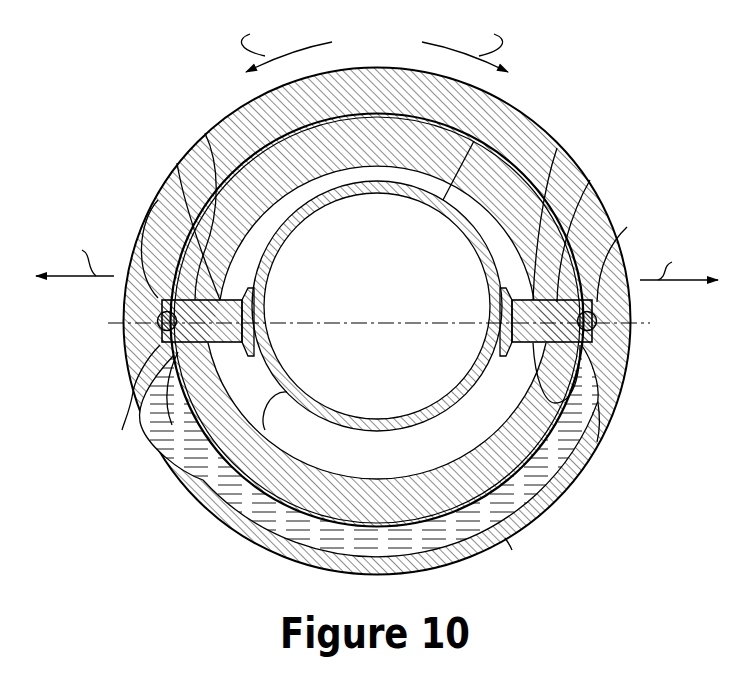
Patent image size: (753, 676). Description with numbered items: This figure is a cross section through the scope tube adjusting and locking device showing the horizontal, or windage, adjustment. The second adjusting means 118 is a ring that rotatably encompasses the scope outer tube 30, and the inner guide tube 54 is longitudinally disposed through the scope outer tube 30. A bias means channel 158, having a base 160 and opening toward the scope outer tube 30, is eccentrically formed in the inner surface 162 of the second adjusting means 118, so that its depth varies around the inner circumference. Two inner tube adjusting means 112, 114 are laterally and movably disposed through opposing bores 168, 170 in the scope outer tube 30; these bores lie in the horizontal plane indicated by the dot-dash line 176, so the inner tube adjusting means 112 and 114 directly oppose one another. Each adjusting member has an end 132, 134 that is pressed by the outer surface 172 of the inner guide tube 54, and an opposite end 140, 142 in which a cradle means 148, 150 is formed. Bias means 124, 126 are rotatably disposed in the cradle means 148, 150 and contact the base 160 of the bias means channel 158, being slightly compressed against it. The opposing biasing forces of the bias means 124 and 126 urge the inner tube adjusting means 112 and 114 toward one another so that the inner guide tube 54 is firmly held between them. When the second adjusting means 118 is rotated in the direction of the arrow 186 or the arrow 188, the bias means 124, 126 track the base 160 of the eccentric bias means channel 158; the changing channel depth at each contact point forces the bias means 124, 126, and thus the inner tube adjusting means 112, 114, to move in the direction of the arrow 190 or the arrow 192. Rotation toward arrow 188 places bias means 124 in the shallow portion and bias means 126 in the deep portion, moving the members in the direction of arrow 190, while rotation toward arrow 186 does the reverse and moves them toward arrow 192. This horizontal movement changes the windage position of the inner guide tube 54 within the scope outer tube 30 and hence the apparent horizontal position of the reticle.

The scope outer tube 30 is at (212, 520).
The inner guide tube 54 is at (202, 446).
The inner tube adjusting means 112 is at (557, 148).
The inner tube adjusting means 114 is at (182, 468).
The second adjusting means 118 is at (250, 122).
The bias means 124 is at (612, 346).
The bias means 126 is at (134, 391).
The end 132 is at (592, 404).
The end 134 is at (205, 133).
The opposite end 140 is at (628, 226).
The opposite end 142 is at (158, 201).
The cradle means 148 is at (590, 181).
The cradle means 150 is at (142, 426).
The bias means channel 158 is at (583, 480).
The base 160 is at (597, 442).
The inner surface 162 is at (510, 541).
The bore 168 is at (590, 378).
The bore 170 is at (177, 166).
The outer surface 172 is at (533, 123).
The dot-dash line 176 is at (146, 340).
The arrow 186 is at (286, 41).
The arrow 188 is at (465, 41).
The arrow 190 is at (75, 250).
The arrow 192 is at (679, 258).